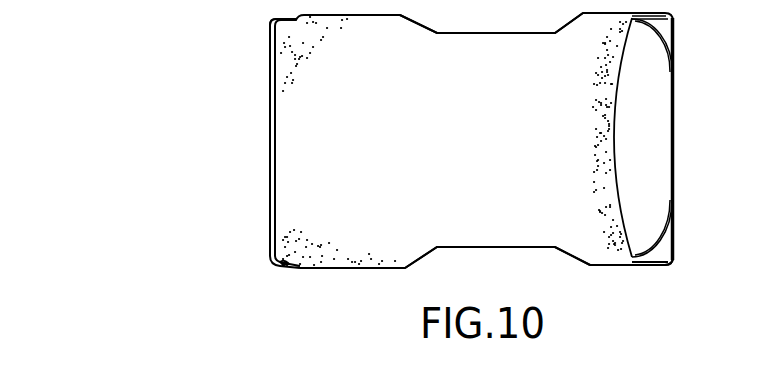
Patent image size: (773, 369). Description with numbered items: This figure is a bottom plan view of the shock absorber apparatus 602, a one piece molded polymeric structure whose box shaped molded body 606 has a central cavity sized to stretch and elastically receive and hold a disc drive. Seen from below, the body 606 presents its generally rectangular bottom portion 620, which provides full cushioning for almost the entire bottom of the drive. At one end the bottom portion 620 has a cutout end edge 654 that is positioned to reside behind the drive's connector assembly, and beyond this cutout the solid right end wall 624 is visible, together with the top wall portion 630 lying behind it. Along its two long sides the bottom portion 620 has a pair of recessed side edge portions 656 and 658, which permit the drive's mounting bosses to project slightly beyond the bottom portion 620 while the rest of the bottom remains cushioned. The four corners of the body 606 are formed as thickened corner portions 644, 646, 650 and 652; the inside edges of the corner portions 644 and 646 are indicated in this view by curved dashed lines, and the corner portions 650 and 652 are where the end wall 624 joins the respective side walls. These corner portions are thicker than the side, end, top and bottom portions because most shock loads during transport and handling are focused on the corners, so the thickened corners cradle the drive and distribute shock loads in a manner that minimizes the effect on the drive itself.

The shock absorber apparatus 602 is at (176, 169).
The box shaped molded body 606 is at (260, 217).
The bottom portion 620 is at (293, 157).
The right end wall 624 is at (677, 60).
The top wall portion 630 is at (660, 162).
The thickened corner portion 644 is at (274, 268).
The thickened corner portion 646 is at (275, 21).
The thickened corner portion 650 is at (663, 30).
The thickened corner portion 652 is at (665, 248).
The cutout end edge 654 is at (620, 88).
The recessed side edge portion 656 is at (457, 33).
The recessed side edge portion 658 is at (489, 247).